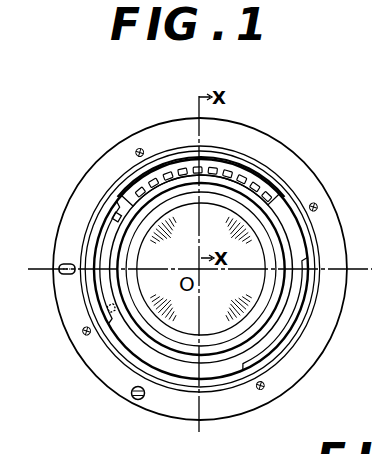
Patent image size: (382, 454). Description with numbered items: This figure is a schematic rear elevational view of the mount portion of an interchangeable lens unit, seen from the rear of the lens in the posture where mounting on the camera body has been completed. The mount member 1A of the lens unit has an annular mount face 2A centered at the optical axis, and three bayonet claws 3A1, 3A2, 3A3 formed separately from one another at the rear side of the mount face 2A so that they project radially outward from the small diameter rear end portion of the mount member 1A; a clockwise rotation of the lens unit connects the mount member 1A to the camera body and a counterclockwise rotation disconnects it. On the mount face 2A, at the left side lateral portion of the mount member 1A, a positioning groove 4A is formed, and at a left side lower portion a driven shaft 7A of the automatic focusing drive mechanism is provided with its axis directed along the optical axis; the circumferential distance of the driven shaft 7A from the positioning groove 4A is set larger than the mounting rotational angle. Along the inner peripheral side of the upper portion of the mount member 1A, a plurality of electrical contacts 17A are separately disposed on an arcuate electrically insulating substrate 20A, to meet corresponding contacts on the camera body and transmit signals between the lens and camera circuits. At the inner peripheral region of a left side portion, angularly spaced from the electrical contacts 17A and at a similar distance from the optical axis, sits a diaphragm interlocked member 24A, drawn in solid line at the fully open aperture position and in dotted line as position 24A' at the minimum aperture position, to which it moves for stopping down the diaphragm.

The mount member 1A is at (277, 142).
The annular mount face 2A is at (310, 185).
The bayonet claw 3A1 is at (174, 156).
The bayonet claw 3A2 is at (93, 312).
The bayonet claw 3A3 is at (303, 332).
The positioning groove 4A is at (67, 276).
The driven shaft 7A is at (138, 400).
The electrical contacts 17A is at (258, 177).
The electrically insulating substrate 20A is at (218, 165).
The diaphragm interlocked member 24A is at (82, 189).
The diaphragm interlocked member at minimum aperture position 24A' is at (85, 351).